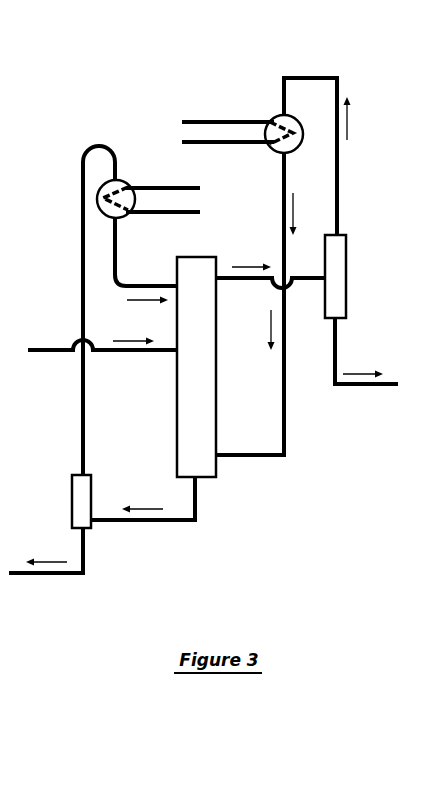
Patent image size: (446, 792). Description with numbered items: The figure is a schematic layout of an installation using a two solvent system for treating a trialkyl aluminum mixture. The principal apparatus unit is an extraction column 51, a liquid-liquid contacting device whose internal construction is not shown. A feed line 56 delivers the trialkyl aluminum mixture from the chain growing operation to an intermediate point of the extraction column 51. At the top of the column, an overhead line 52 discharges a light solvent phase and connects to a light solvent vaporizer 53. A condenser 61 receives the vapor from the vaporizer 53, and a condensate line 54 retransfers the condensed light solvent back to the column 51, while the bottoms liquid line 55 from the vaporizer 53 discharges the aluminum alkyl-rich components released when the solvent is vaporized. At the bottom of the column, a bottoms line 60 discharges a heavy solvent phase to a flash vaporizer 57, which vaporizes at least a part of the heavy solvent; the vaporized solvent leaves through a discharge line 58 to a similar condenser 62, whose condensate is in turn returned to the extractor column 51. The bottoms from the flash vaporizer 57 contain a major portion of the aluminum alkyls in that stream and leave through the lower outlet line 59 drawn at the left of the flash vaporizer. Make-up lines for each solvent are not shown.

The extraction column 51 is at (186, 385).
The overhead line 52 is at (253, 284).
The vaporizer 53 is at (347, 292).
The condensate line 54 is at (339, 195).
The bottoms liquid line 55 is at (377, 388).
The feed line 56 is at (55, 352).
The flash vaporizer 57 is at (71, 505).
The discharge line for vaporized solvent 58 is at (85, 433).
The outlet line 59 is at (50, 575).
The bottoms line 60 is at (197, 501).
The condenser 61 is at (281, 114).
The condenser 62 is at (123, 182).